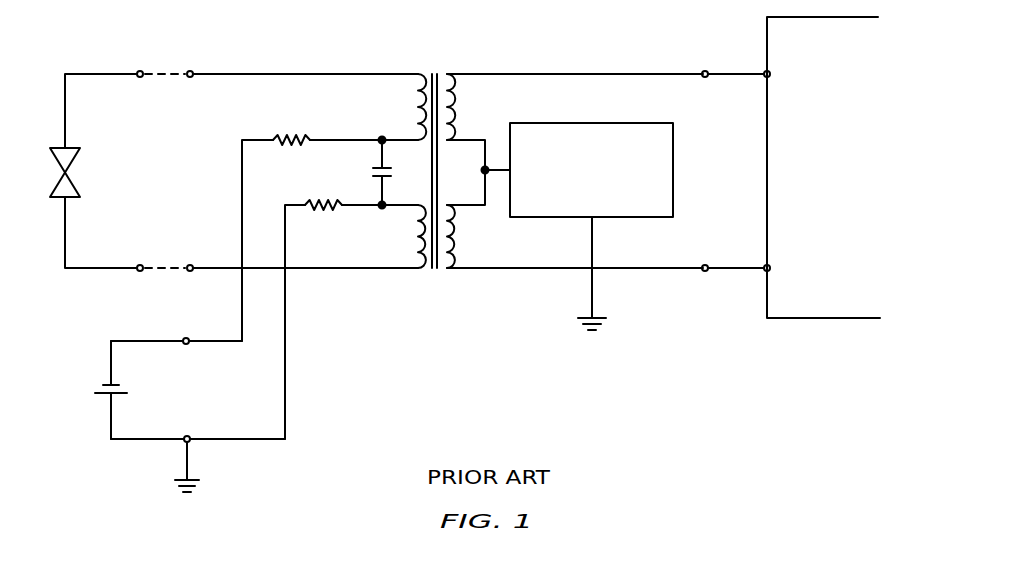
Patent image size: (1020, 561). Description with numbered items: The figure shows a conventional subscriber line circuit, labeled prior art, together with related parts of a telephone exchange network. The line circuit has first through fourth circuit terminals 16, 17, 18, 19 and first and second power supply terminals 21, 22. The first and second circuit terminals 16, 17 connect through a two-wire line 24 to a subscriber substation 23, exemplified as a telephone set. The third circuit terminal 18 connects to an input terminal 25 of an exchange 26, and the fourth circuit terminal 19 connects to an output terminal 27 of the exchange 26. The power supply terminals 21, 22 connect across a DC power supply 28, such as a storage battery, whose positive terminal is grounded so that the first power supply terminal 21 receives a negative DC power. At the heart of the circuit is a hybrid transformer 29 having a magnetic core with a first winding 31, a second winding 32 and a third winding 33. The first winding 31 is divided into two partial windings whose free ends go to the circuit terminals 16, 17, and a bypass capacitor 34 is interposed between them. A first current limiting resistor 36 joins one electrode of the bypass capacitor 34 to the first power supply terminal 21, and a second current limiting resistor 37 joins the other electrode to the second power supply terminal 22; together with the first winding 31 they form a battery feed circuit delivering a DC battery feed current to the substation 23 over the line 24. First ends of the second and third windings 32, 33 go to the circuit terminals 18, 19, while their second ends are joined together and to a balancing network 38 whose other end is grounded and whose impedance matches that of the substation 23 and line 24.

The first circuit terminal 16 is at (193, 70).
The second circuit terminal 17 is at (190, 263).
The third circuit terminal 18 is at (704, 70).
The fourth circuit terminal 19 is at (704, 273).
The first power supply terminal 21 is at (188, 346).
The second power supply terminal 22 is at (189, 435).
The subscriber substation 23 is at (75, 176).
The two-wire line 24 is at (141, 274).
The input terminal 25 is at (770, 70).
The exchange 26 is at (822, 320).
The output terminal 27 is at (771, 266).
The DC power supply 28 is at (100, 395).
The hybrid transformer 29 is at (434, 68).
The first winding 31 is at (414, 108).
The second winding 32 is at (458, 108).
The third winding 33 is at (465, 243).
The bypass capacitor 34 is at (372, 170).
The first current limiting resistor 36 is at (291, 136).
The second current limiting resistor 37 is at (324, 212).
The balancing network 38 is at (650, 220).